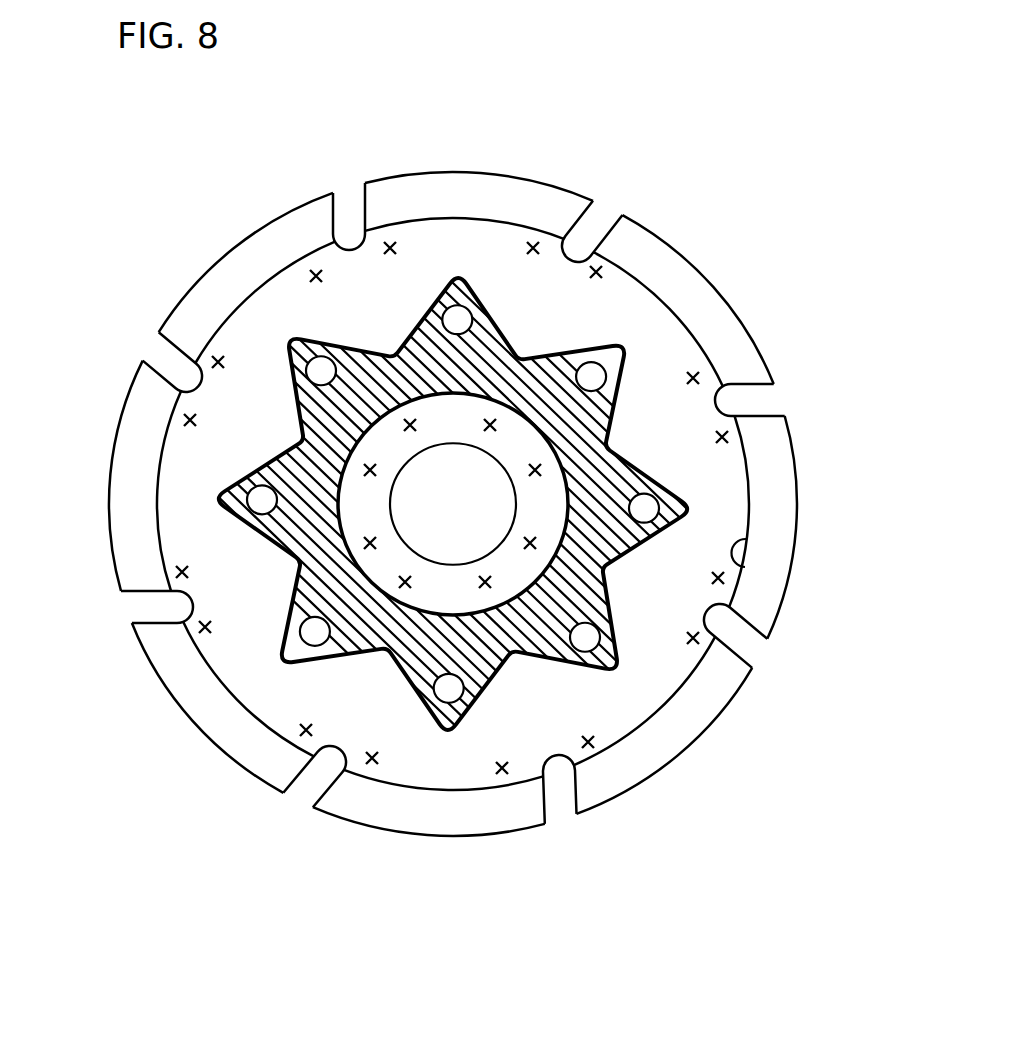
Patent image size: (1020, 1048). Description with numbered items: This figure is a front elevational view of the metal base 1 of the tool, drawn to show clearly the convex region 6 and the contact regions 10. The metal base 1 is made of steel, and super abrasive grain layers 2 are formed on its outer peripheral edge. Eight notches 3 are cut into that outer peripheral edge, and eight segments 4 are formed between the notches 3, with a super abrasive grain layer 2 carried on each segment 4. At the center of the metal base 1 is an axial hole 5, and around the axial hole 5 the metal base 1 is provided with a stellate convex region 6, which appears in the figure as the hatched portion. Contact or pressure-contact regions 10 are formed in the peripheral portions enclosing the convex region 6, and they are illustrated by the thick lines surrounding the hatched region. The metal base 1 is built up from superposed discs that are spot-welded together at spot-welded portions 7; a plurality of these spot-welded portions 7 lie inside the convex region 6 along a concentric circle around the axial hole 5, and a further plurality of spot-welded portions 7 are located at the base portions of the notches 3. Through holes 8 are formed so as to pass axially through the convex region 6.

The metal base 1 is at (633, 300).
The super abrasive grain layer 2 is at (715, 323).
The notch 3 is at (732, 402).
The segment 4 is at (733, 565).
The axial hole 5 is at (401, 481).
The convex region 6 is at (330, 422).
The spot-welded portion 7 is at (505, 768).
The through hole 8 is at (422, 710).
The contact region 10 is at (412, 350).